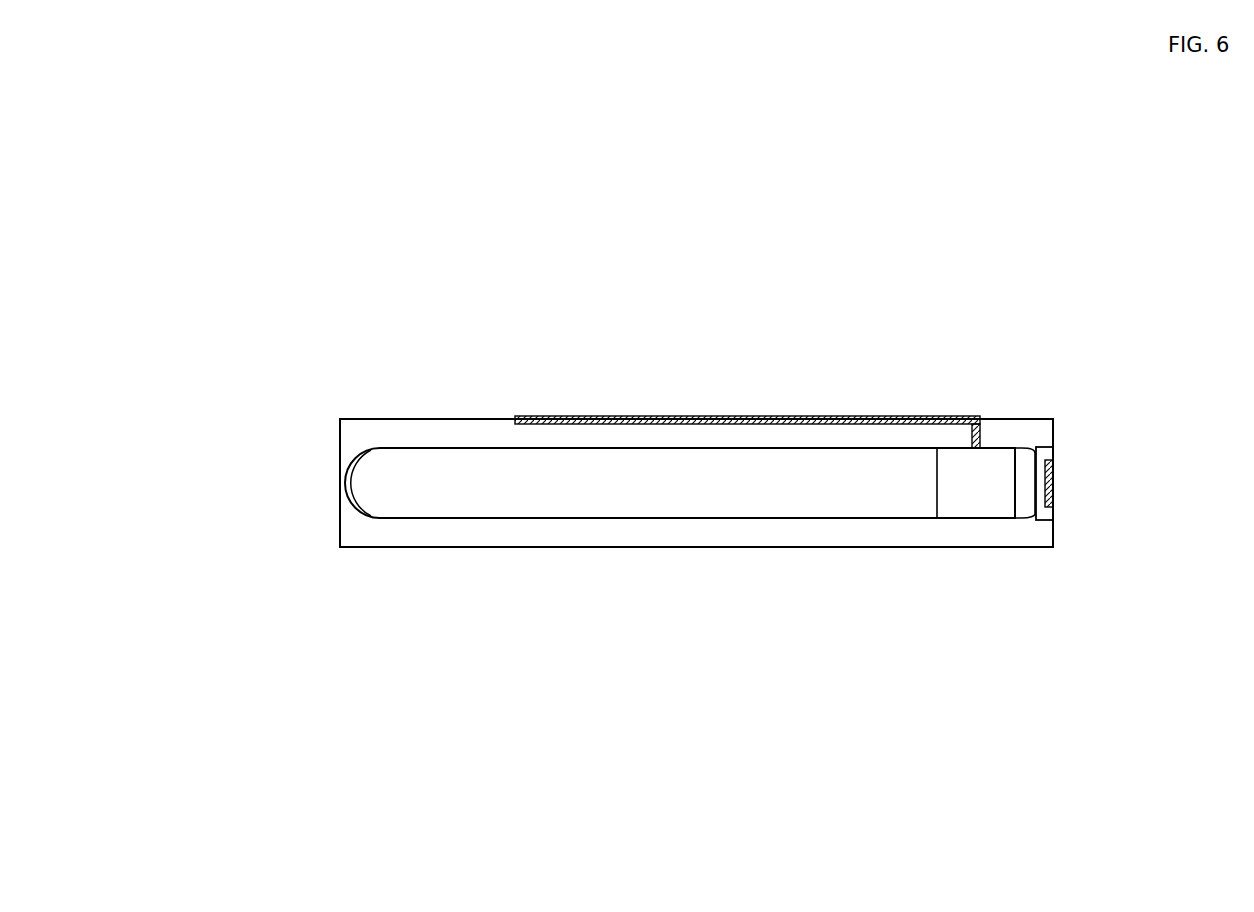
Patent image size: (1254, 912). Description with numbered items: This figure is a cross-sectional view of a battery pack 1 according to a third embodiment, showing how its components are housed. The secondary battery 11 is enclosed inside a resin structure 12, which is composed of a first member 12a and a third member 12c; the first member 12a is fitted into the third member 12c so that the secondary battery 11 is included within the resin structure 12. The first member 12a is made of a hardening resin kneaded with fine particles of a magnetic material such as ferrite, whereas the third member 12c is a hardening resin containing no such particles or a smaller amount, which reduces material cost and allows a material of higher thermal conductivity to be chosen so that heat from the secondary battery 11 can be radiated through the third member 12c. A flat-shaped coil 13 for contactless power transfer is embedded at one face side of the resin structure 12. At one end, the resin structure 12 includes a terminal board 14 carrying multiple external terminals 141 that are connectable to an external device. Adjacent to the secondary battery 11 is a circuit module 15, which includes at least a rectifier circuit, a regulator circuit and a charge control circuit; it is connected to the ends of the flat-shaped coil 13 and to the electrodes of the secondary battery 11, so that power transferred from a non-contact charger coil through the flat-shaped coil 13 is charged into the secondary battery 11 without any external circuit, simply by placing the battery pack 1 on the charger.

The battery pack 1 is at (829, 297).
The secondary battery 11 is at (728, 508).
The resin structure 12 is at (220, 412).
The first member 12a is at (367, 433).
The third member 12c is at (367, 528).
The flat-shaped coil 13 is at (693, 416).
The terminal board 14 is at (1044, 453).
The external terminals 141 is at (1053, 480).
The circuit module 15 is at (965, 503).